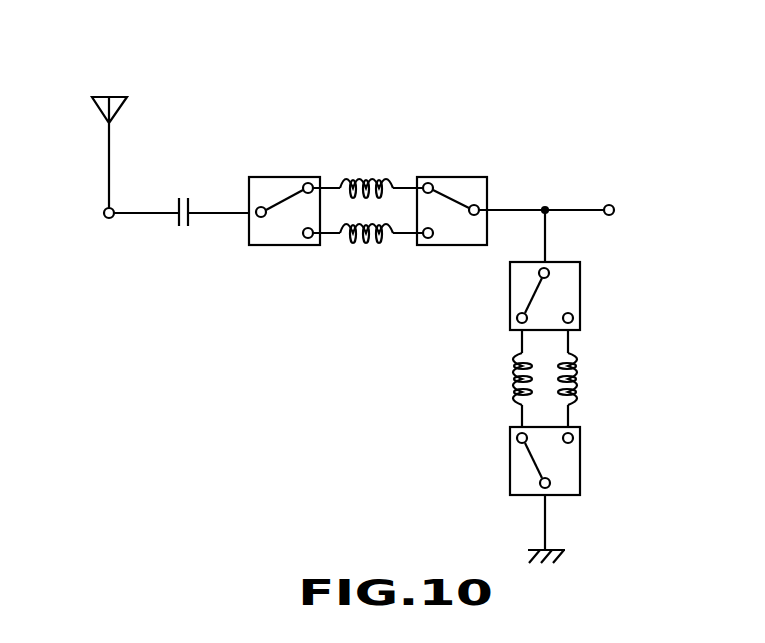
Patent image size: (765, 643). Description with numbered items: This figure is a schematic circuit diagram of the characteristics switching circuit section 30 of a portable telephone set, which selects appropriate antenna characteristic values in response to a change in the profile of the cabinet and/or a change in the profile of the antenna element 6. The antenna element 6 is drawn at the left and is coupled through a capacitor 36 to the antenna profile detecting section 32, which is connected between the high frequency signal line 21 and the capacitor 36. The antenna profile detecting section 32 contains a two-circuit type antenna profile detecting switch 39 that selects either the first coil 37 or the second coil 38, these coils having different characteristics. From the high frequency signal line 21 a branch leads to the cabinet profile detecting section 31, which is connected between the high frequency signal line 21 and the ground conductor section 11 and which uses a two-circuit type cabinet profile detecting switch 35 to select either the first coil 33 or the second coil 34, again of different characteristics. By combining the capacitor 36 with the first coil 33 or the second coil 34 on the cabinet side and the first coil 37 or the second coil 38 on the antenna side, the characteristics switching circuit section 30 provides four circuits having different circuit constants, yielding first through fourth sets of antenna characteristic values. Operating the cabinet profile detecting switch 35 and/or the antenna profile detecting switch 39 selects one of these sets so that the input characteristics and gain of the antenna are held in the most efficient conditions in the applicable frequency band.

The antenna element 6 is at (109, 141).
The capacitor 36 is at (186, 228).
The characteristics switching circuit section 30 is at (414, 97).
The antenna profile detecting section 32 is at (316, 161).
The antenna profile detecting switch 39 is at (274, 206).
The first coil 37 is at (363, 174).
The second coil 38 is at (363, 243).
The high frequency signal line 21 is at (568, 208).
The cabinet profile detecting section 31 is at (601, 296).
The cabinet profile detecting switch 35 is at (537, 290).
The first coil 33 is at (508, 372).
The second coil 34 is at (580, 372).
The ground conductor section 11 is at (563, 548).